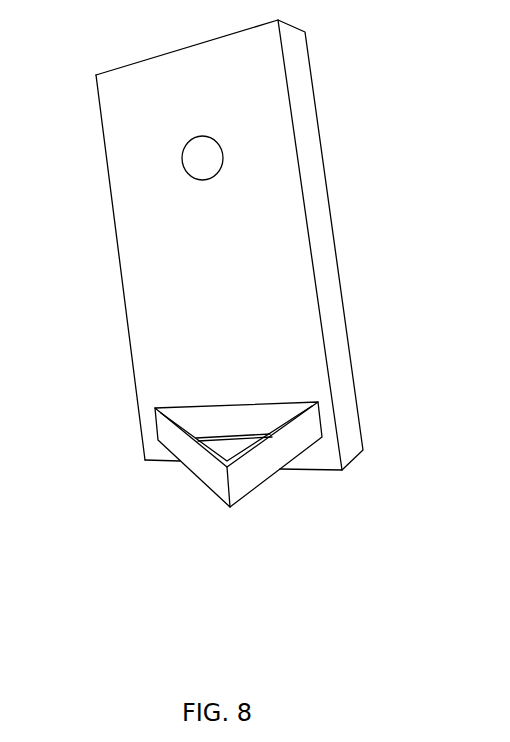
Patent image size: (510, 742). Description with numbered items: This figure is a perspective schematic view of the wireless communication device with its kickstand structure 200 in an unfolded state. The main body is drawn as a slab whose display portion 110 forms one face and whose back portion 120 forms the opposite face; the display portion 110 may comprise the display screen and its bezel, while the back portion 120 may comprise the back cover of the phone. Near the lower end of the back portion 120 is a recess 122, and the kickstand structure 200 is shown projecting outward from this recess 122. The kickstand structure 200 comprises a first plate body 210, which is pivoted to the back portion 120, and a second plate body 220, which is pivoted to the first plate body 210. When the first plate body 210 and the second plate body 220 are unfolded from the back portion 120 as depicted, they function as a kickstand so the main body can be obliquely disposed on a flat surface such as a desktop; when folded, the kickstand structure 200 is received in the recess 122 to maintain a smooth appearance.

The display portion 110 is at (337, 280).
The back portion 120 is at (130, 194).
The recess 122 is at (235, 415).
The kickstand structure 200 is at (238, 499).
The first plate body 210 is at (203, 470).
The second plate body 220 is at (256, 470).